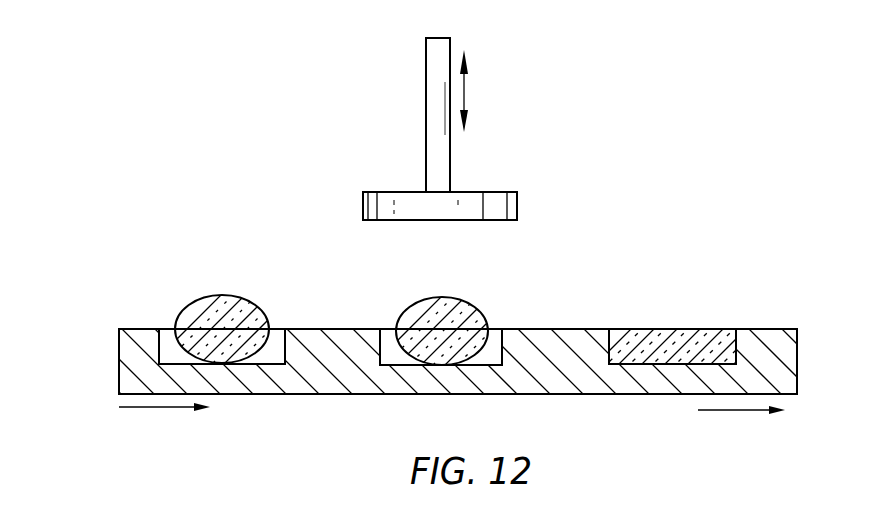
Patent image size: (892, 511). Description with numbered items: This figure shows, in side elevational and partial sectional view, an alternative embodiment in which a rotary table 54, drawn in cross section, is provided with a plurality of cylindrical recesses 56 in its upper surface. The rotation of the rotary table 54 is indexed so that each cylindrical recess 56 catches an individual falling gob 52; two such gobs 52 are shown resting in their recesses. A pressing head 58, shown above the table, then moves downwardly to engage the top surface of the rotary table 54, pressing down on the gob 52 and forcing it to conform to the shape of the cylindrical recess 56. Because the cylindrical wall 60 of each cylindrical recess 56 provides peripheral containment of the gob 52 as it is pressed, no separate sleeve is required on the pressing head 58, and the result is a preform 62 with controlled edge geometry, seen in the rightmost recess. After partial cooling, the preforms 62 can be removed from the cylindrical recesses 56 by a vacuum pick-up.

The gob 52 is at (243, 304).
The rotary table 54 is at (228, 372).
The cylindrical recess 56 is at (165, 337).
The pressing head 58 is at (502, 192).
The cylindrical wall 60 is at (161, 362).
The preform 62 is at (692, 338).